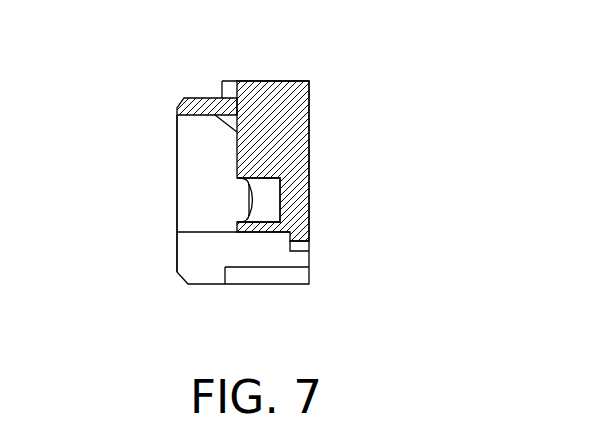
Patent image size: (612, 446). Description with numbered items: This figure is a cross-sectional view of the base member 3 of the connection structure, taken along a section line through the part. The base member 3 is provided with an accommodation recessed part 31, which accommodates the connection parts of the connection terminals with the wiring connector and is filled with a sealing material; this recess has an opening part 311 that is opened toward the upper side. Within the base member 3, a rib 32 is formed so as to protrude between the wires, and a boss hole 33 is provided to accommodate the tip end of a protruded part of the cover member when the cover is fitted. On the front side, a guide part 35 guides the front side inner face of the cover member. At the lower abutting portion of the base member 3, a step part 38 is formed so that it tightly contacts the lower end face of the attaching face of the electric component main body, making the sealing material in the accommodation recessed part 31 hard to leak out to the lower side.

The base member 3 is at (239, 155).
The accommodation recessed part 31 is at (188, 208).
The opening part 311 is at (177, 172).
The rib 32 is at (234, 160).
The boss hole 33 is at (274, 203).
The guide part 35 is at (181, 100).
The step part 38 is at (294, 241).